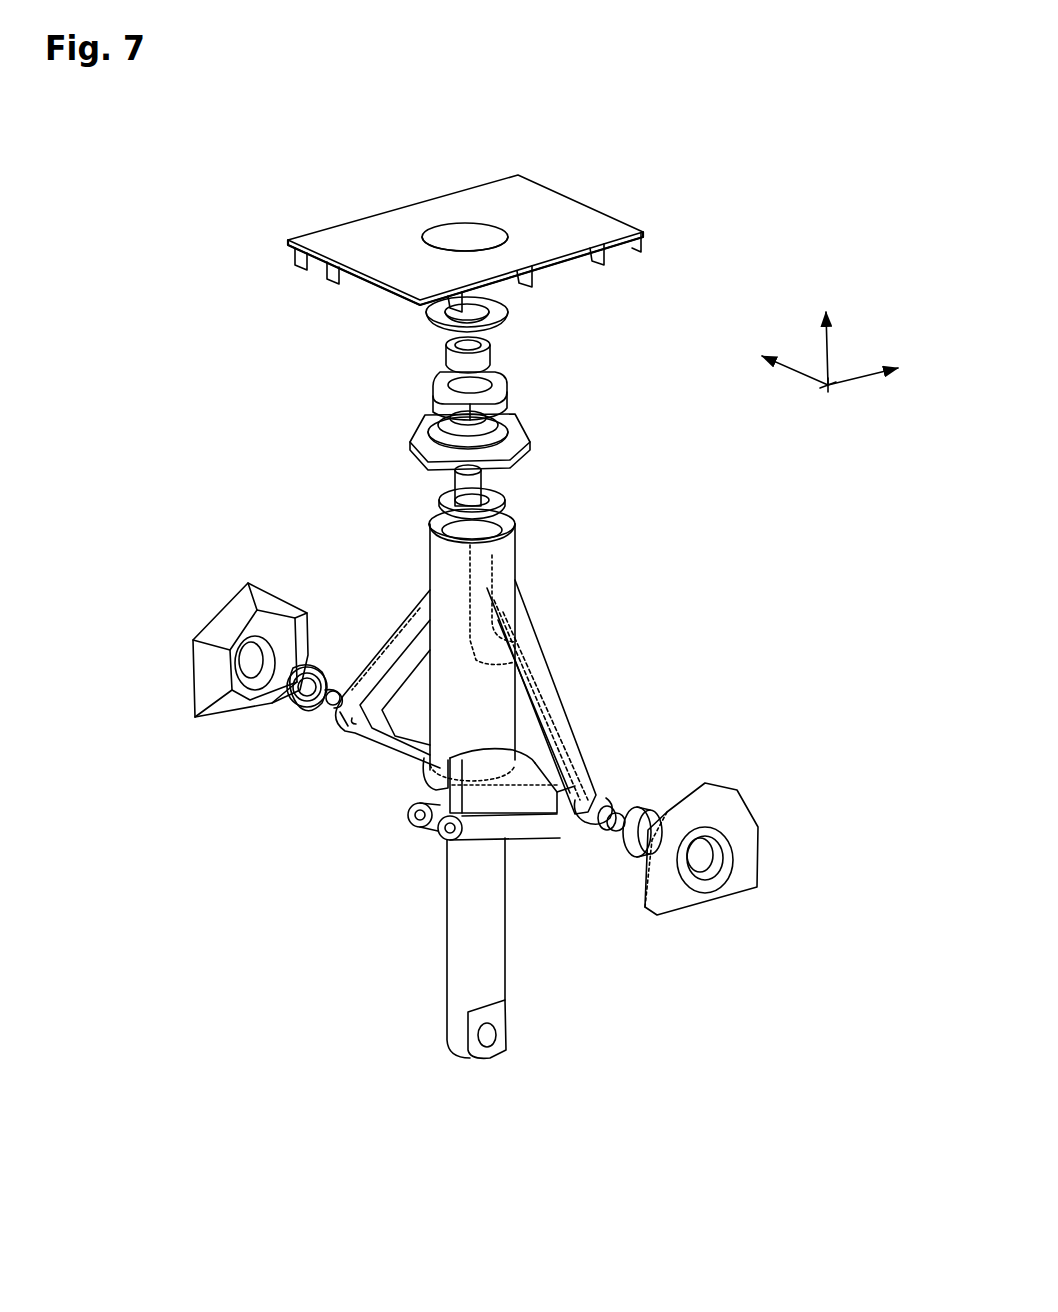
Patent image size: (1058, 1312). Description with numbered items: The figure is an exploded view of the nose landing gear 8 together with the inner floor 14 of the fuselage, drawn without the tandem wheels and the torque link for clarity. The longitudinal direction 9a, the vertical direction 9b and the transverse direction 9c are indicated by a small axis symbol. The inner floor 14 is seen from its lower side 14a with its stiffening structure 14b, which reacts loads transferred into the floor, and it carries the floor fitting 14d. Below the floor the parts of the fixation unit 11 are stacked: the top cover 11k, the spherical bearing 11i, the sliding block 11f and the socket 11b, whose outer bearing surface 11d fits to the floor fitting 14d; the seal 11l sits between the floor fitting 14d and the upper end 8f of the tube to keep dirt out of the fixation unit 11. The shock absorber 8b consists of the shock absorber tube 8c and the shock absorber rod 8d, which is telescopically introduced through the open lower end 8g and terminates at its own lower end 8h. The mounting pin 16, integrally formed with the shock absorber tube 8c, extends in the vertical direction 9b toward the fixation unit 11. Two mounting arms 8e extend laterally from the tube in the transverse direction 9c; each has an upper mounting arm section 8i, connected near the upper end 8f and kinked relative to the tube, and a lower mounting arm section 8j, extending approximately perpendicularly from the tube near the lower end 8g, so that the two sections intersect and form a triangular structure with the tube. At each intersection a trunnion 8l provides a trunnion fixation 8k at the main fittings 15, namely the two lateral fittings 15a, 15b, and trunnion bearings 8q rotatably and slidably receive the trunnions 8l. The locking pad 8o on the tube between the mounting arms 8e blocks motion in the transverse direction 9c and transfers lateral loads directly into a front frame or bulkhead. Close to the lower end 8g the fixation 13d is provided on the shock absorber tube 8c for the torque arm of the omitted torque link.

The nose landing gear 8 is at (492, 834).
The shock absorber 8b is at (512, 958).
The shock absorber tube 8c is at (452, 682).
The shock absorber rod 8d is at (470, 948).
The mounting arm 8e is at (570, 708).
The upper end 8f is at (490, 521).
The lower end 8g is at (483, 842).
The lower end of the shock absorber rod 8h is at (468, 1068).
The upper mounting arm section 8i is at (538, 682).
The lower mounting arm section 8j is at (507, 805).
The trunnion fixation 8k is at (734, 848).
The trunnion 8l is at (617, 822).
The locking pad 8o is at (417, 781).
The trunnion bearing 8q is at (632, 838).
The longitudinal direction 9a is at (865, 378).
The vertical direction 9b is at (824, 352).
The transverse direction 9c is at (797, 377).
The fixation unit 11 is at (475, 391).
The socket 11b is at (440, 440).
The outer bearing surface 11d is at (460, 238).
The sliding block 11f is at (494, 394).
The spherical bearing 11i is at (446, 352).
The top cover 11k is at (497, 313).
The seal 11l is at (438, 497).
The fixation 13d is at (418, 830).
The inner floor 14 is at (601, 203).
The lower side 14a is at (588, 268).
The stiffening structure 14b is at (322, 272).
The floor fitting 14d is at (468, 228).
The bracket 15 is at (736, 858).
The lateral fitting 15a is at (722, 805).
The lateral fitting 15b is at (205, 656).
The mounting pin 16 is at (466, 491).